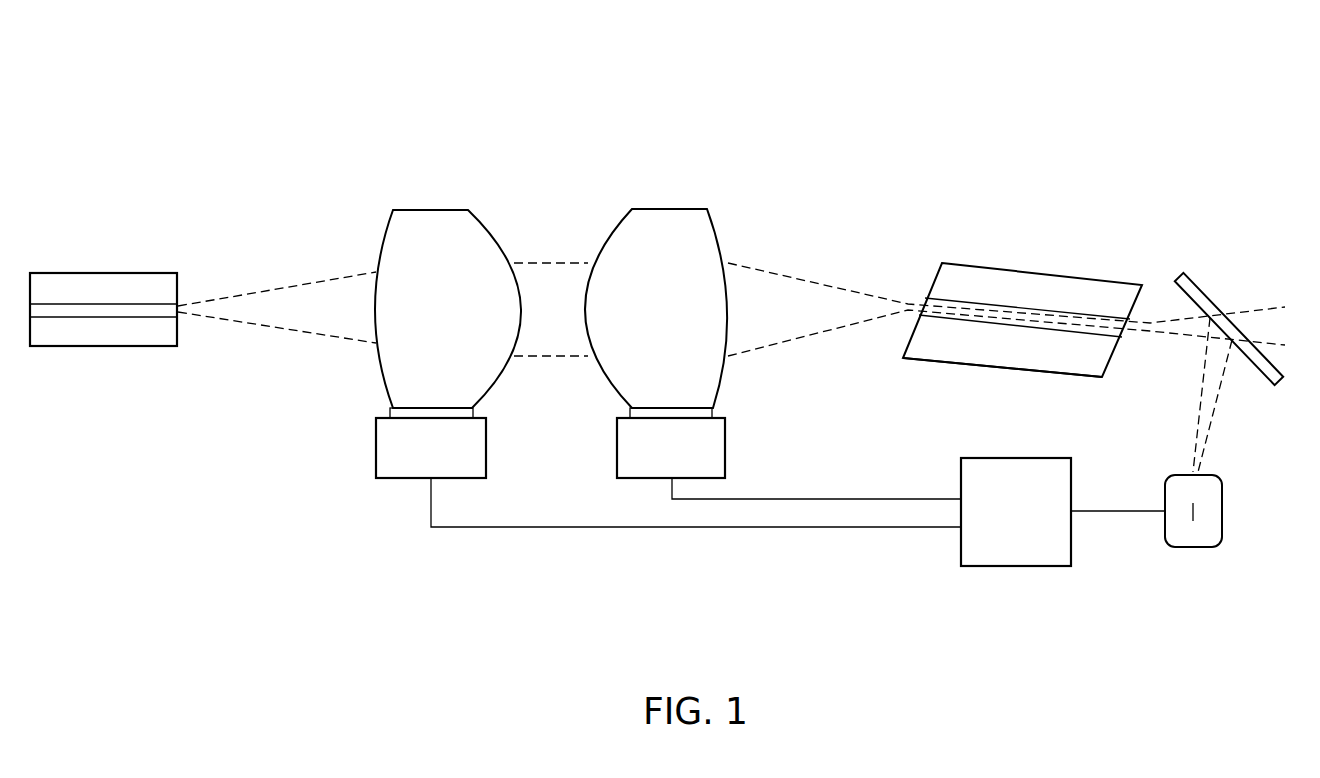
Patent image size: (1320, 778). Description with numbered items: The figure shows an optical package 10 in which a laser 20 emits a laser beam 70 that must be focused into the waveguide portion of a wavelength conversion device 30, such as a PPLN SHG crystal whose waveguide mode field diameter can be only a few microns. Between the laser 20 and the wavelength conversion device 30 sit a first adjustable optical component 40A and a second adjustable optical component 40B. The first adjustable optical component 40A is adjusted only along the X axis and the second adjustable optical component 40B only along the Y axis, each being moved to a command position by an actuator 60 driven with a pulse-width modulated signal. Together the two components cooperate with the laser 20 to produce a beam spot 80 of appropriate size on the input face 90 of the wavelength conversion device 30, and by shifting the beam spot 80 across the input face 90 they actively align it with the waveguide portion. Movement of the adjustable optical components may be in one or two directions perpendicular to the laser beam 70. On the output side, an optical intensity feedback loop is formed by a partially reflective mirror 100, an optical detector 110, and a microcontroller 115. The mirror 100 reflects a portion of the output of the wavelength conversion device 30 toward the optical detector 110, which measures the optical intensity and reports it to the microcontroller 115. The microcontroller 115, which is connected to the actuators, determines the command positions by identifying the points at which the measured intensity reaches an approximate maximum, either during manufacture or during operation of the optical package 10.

The optical package 10 is at (963, 100).
The laser 20 is at (100, 347).
The wavelength conversion device 30 is at (1040, 270).
The first adjustable optical component 40A is at (425, 207).
The second adjustable optical component 40B is at (665, 207).
The actuator 60 is at (486, 445).
The laser beam 70 is at (552, 263).
The beam spot 80 is at (906, 296).
The input face 90 is at (903, 345).
The partially reflective mirror 100 is at (1203, 283).
The optical detector 110 is at (1193, 550).
The microcontroller 115 is at (1010, 568).